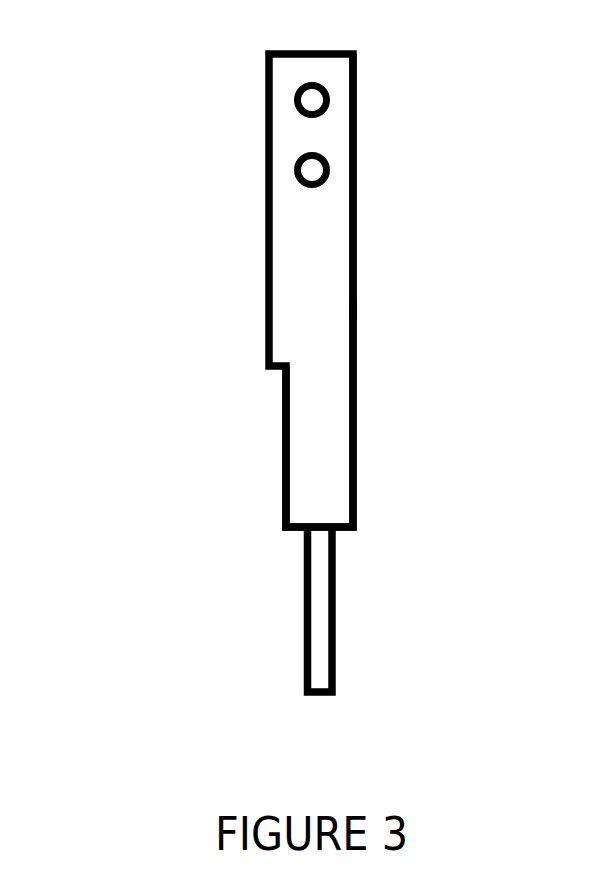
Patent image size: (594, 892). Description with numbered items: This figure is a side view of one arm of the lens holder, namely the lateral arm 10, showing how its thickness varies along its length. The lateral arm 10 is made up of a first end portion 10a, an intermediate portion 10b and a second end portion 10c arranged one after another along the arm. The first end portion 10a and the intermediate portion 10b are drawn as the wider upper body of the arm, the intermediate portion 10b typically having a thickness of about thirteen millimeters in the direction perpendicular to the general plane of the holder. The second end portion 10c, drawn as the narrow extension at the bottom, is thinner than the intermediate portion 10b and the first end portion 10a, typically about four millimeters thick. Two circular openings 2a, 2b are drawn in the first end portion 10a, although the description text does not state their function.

The lateral arm 10 is at (266, 322).
The first end portion 10a is at (355, 136).
The intermediate portion 10b is at (357, 312).
The second end portion 10c is at (335, 612).
The first hole 2a is at (295, 102).
The second hole 2b is at (296, 179).